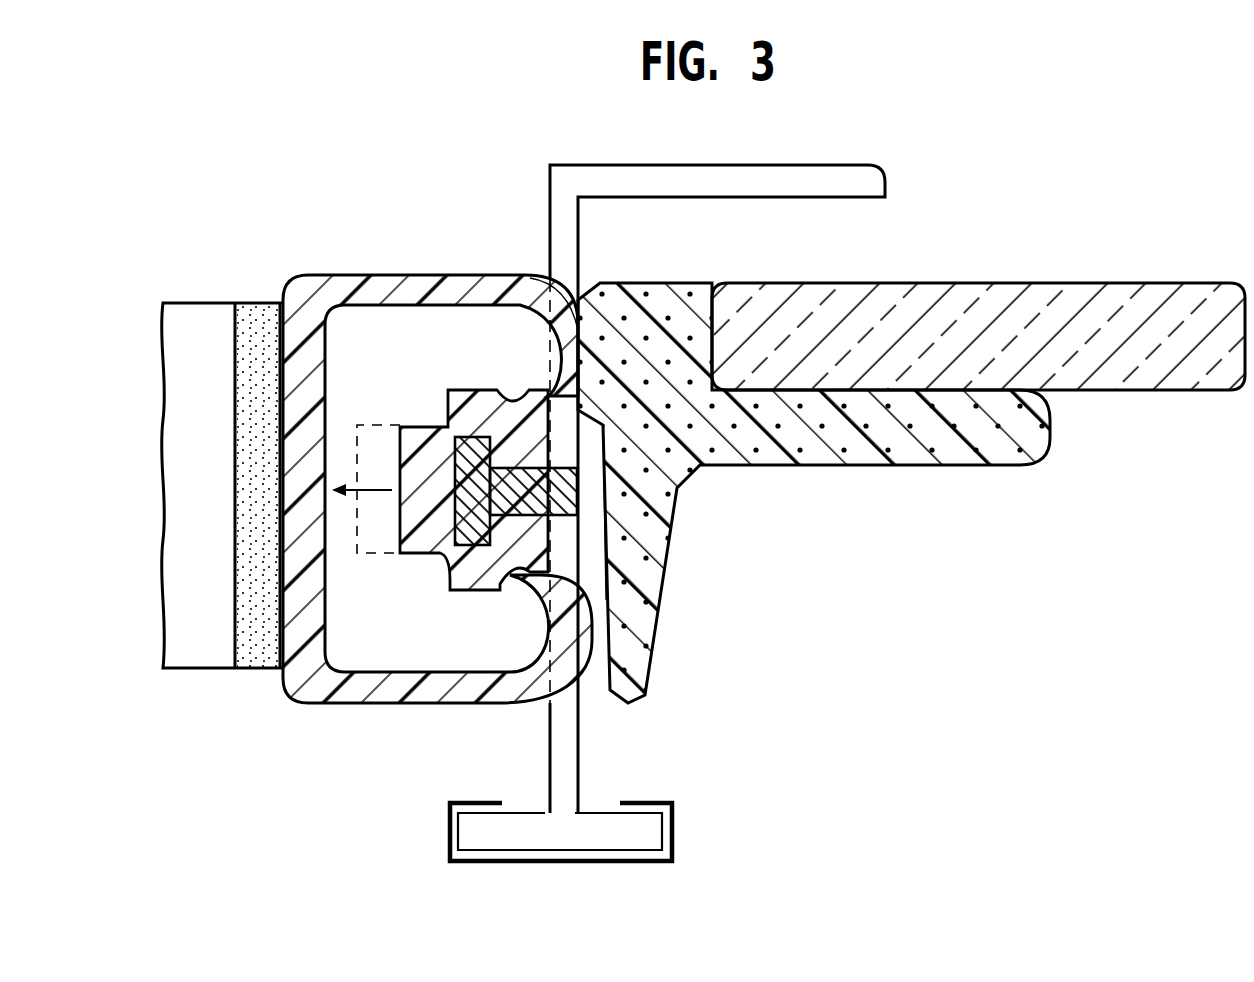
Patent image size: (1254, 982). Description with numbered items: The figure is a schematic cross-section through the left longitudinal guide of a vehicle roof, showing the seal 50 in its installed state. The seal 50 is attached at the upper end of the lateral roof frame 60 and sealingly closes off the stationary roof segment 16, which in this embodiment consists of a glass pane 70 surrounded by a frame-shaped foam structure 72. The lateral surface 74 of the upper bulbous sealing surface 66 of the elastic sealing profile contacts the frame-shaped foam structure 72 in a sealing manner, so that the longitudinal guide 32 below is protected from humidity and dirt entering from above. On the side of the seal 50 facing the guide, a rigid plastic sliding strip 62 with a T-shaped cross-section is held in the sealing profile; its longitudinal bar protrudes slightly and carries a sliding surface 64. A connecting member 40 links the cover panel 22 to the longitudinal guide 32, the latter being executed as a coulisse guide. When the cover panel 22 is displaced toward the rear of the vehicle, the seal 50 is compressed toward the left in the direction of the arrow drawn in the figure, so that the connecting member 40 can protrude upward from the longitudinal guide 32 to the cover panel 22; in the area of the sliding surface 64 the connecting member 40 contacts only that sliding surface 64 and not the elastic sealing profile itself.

The stationary roof segment 16 is at (1063, 490).
The cover panel 22 is at (768, 177).
The longitudinal guide 32 is at (678, 832).
The connecting member 40 is at (560, 742).
The seal 50 is at (350, 262).
The lateral roof frame 60 is at (168, 478).
The sliding strip 62 is at (605, 528).
The sliding surface 64 is at (580, 478).
The upper bulbous sealing surface 66 is at (575, 392).
The glass pane 70 is at (1076, 318).
The frame-shaped foam structure 72 is at (905, 438).
The lateral surface 74 is at (557, 302).